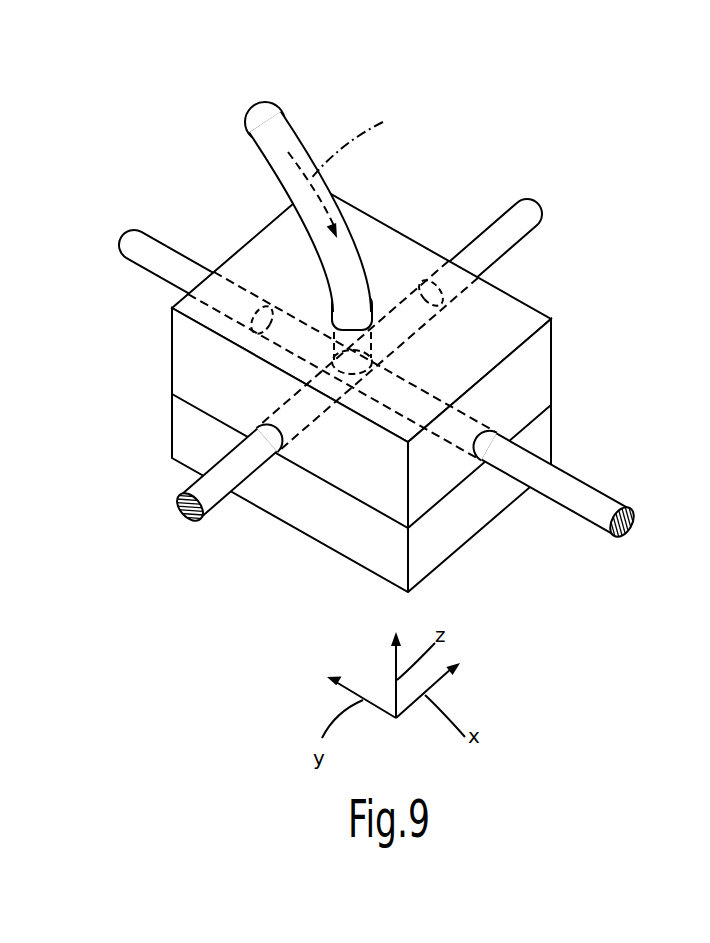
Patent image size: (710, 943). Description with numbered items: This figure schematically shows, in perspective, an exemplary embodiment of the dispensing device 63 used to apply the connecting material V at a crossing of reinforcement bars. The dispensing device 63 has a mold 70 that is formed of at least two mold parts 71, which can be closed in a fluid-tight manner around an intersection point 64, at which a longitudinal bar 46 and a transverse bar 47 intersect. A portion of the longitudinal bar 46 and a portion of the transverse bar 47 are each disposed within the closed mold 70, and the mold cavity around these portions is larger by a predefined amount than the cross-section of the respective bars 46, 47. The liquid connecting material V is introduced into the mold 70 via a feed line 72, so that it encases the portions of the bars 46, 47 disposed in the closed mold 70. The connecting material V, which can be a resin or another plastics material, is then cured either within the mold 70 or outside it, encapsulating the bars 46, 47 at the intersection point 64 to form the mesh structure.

The longitudinal bar 46 is at (210, 490).
The transverse bar 47 is at (583, 503).
The dispensing device 63 is at (462, 158).
The intersection point 64 is at (398, 358).
The mold 70 is at (408, 388).
The mold part 71 is at (628, 438).
The feed line 72 is at (265, 118).